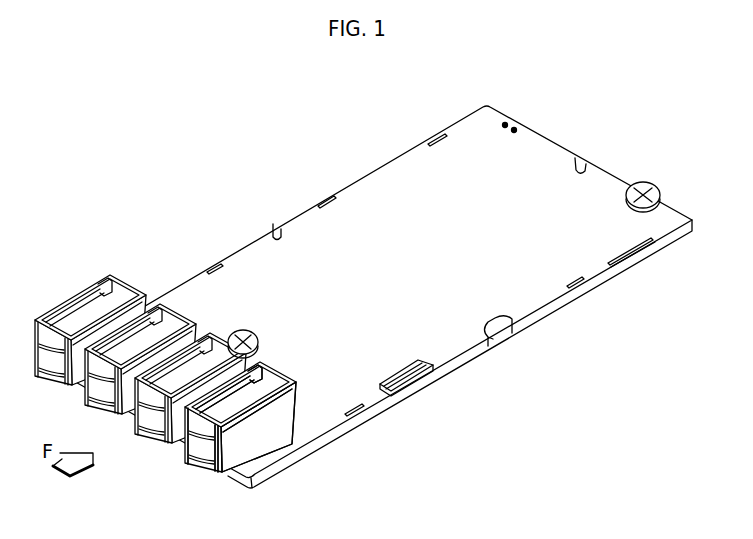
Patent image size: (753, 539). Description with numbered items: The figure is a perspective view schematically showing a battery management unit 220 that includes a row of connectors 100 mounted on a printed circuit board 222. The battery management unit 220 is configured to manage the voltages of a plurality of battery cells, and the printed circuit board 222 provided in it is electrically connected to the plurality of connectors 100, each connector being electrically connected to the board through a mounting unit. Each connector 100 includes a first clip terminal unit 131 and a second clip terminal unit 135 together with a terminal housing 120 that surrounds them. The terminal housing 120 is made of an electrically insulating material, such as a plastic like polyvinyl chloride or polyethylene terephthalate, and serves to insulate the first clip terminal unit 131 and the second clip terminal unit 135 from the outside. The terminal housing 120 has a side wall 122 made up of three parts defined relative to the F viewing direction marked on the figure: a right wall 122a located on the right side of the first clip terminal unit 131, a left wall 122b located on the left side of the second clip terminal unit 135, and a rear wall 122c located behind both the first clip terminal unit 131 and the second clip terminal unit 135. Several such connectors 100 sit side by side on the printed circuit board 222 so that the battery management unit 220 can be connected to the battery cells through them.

The connector 100 is at (58, 288).
The terminal housing 120 is at (288, 361).
The side wall 122 is at (608, 461).
The right wall 122a is at (233, 448).
The left wall 122b is at (176, 393).
The rear wall 122c is at (397, 448).
The first clip terminal unit 131 is at (262, 338).
The second clip terminal unit 135 is at (250, 404).
The battery management unit 220 is at (149, 117).
The printed circuit board 222 is at (387, 188).